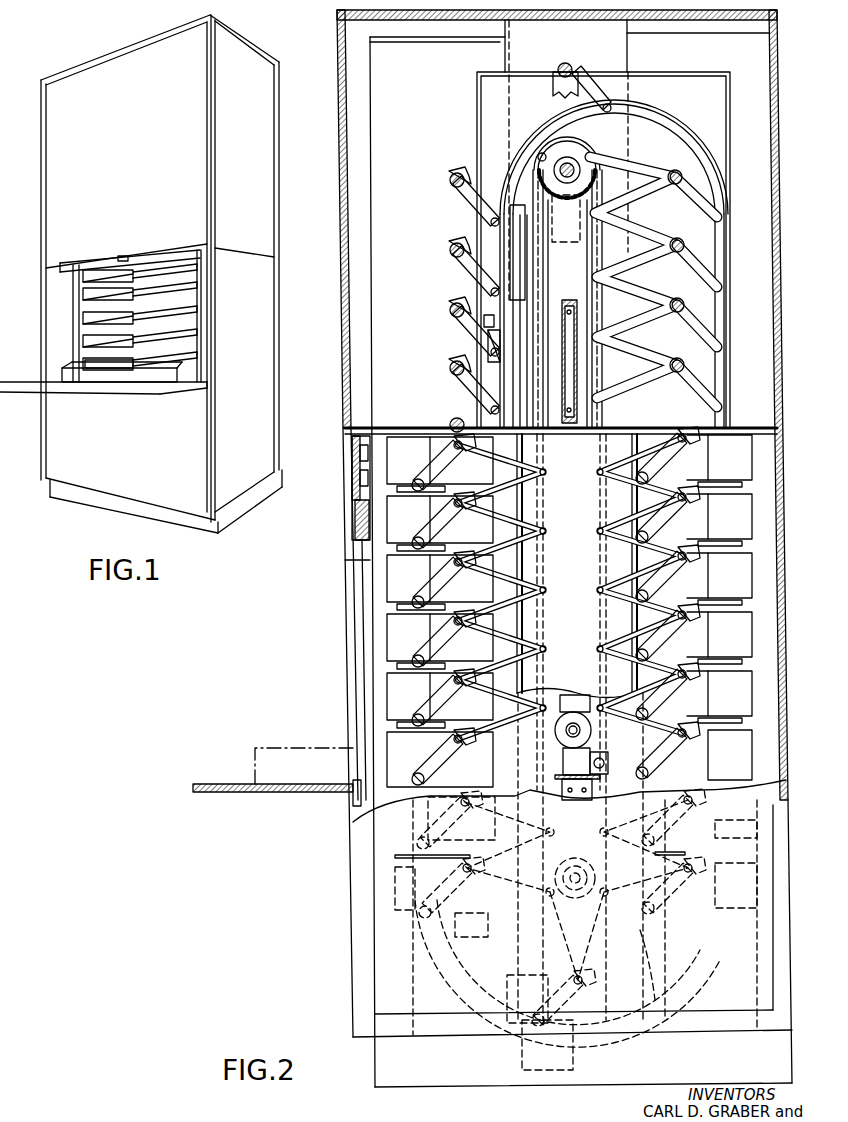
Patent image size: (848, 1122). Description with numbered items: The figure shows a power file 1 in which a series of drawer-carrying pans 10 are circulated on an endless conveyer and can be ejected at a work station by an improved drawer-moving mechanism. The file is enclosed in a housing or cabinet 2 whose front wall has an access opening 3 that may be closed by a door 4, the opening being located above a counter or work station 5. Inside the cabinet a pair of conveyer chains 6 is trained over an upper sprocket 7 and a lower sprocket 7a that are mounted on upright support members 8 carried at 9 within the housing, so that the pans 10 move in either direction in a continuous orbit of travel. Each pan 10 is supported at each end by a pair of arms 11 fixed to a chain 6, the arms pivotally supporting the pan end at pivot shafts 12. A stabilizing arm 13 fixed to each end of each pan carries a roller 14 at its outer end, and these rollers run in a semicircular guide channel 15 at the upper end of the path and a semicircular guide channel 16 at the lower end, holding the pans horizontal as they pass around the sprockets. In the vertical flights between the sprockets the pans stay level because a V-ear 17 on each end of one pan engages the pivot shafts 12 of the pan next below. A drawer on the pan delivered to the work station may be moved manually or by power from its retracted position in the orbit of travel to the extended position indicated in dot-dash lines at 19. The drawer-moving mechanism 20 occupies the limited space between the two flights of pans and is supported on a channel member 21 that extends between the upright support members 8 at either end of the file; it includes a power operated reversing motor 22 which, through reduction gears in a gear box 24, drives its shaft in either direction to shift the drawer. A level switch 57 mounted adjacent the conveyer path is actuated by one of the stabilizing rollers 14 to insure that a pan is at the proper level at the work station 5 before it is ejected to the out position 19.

In FIG. 1, the power file 1 is at (62, 504).
In FIG. 2, the power file 1 is at (333, 933).
In FIG. 1, the housing or cabinet 2 is at (253, 85).
In FIG. 2, the housing or cabinet 2 is at (343, 168).
In FIG. 1, the access opening 3 is at (77, 293).
In FIG. 2, the access opening 3 is at (355, 575).
In FIG. 1, the door 4 is at (155, 258).
In FIG. 2, the door 4 is at (360, 452).
In FIG. 1, the counter or work station 5 is at (84, 392).
In FIG. 2, the counter or work station 5 is at (218, 793).
In FIG. 2, the conveyer chains 6 is at (600, 180).
In FIG. 2, the sprocket 7 is at (558, 152).
In FIG. 2, the sprocket 7a is at (552, 900).
In FIG. 2, the upright support members 8 is at (600, 50).
In FIG. 2, the mounting location 9 is at (505, 30).
In FIG. 1, the pans 10 is at (187, 345).
In FIG. 2, the pans 10 is at (395, 625).
In FIG. 2, the arms 11 is at (648, 170).
In FIG. 2, the pivot shafts 12 is at (452, 178).
In FIG. 2, the stabilizing arm 13 is at (478, 202).
In FIG. 2, the roller 14 is at (470, 282).
In FIG. 2, the semicircular guide channel 15 is at (722, 244).
In FIG. 2, the semicircular guide channel 16 is at (650, 950).
In FIG. 2, the V-ear 17 is at (450, 506).
In FIG. 2, the extended drawer position 19 is at (291, 748).
In FIG. 2, the drawer-moving mechanism 20 is at (572, 692).
In FIG. 2, the channel member 21 is at (575, 861).
In FIG. 2, the reversing motor 22 is at (580, 730).
In FIG. 2, the gear box 24 is at (600, 780).
In FIG. 2, the level switch 57 is at (483, 349).